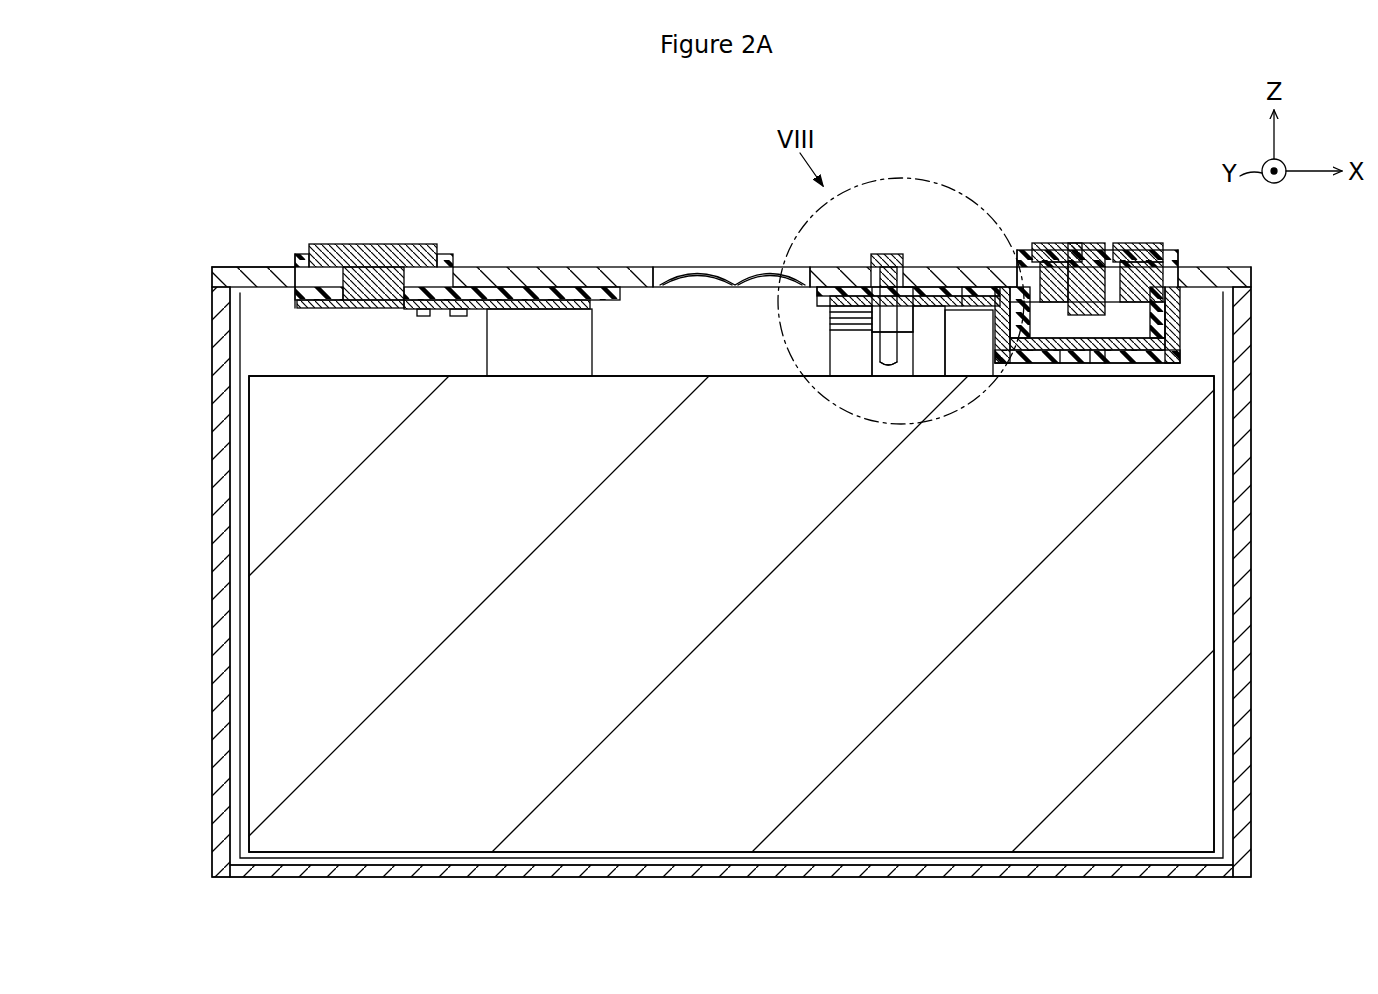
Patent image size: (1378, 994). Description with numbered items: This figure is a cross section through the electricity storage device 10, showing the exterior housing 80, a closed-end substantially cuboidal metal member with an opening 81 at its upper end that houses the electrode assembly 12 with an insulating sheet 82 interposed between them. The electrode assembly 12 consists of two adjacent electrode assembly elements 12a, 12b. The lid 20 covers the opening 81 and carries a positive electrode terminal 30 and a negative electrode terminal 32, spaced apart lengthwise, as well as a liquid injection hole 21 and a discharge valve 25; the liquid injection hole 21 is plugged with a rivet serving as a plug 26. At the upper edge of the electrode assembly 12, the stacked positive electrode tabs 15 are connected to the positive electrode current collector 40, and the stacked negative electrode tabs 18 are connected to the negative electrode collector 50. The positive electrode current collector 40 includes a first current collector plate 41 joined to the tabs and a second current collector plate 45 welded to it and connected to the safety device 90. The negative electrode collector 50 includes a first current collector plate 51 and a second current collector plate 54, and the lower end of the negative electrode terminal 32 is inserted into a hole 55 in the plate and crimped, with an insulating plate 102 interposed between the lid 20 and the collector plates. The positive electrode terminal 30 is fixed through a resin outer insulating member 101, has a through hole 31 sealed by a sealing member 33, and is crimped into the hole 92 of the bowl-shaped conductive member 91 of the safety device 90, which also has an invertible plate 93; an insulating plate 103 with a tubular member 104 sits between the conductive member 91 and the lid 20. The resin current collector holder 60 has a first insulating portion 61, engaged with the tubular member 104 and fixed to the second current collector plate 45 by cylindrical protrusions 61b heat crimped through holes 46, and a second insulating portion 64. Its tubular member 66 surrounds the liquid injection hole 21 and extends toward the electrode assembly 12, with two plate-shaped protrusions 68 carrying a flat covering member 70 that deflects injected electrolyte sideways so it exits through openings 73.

The electricity storage device 10 is at (603, 168).
The electrode assembly 12 is at (905, 815).
The electrode assembly element 12a is at (712, 815).
The electrode assembly element 12b is at (712, 815).
The positive electrode tabs 15 is at (930, 350).
The negative electrode tabs 18 is at (590, 345).
The lid 20 is at (600, 268).
The liquid injection hole 21 is at (893, 255).
The discharge valve 25 is at (695, 275).
The plug 26 is at (876, 300).
The positive electrode terminal 30 is at (1055, 243).
The through hole 31 is at (1090, 245).
The negative electrode terminal 32 is at (375, 244).
The sealing member 33 is at (1140, 250).
The positive electrode current collector 40 is at (935, 295).
The first current collector plate 41 is at (960, 290).
The second current collector plate 45 is at (1000, 360).
The holes 46 is at (1170, 365).
The negative electrode collector 50 is at (313, 312).
The first current collector plate 51 is at (528, 295).
The second current collector plate 54 is at (325, 310).
The hole 55 is at (390, 308).
The current collector holder 60 is at (815, 297).
The first insulating portion 61 is at (1182, 347).
The protrusions 61b is at (1035, 365).
The second insulating portion 64 is at (835, 290).
The tubular member 66 is at (838, 320).
The protrusions 68 is at (897, 365).
The covering member 70 is at (880, 348).
The openings 73 is at (848, 350).
The exterior housing 80 is at (212, 445).
The opening 81 is at (233, 275).
The insulating sheet 82 is at (240, 530).
The safety device 90 is at (1100, 365).
The conductive member 91 is at (1120, 365).
The hole 92 is at (1070, 365).
The invertible plate 93 is at (1180, 332).
The outer insulating member 101 is at (1178, 262).
The insulating plate 102 is at (300, 297).
The insulating plate 103 is at (1182, 305).
The tubular member 104 is at (1182, 313).